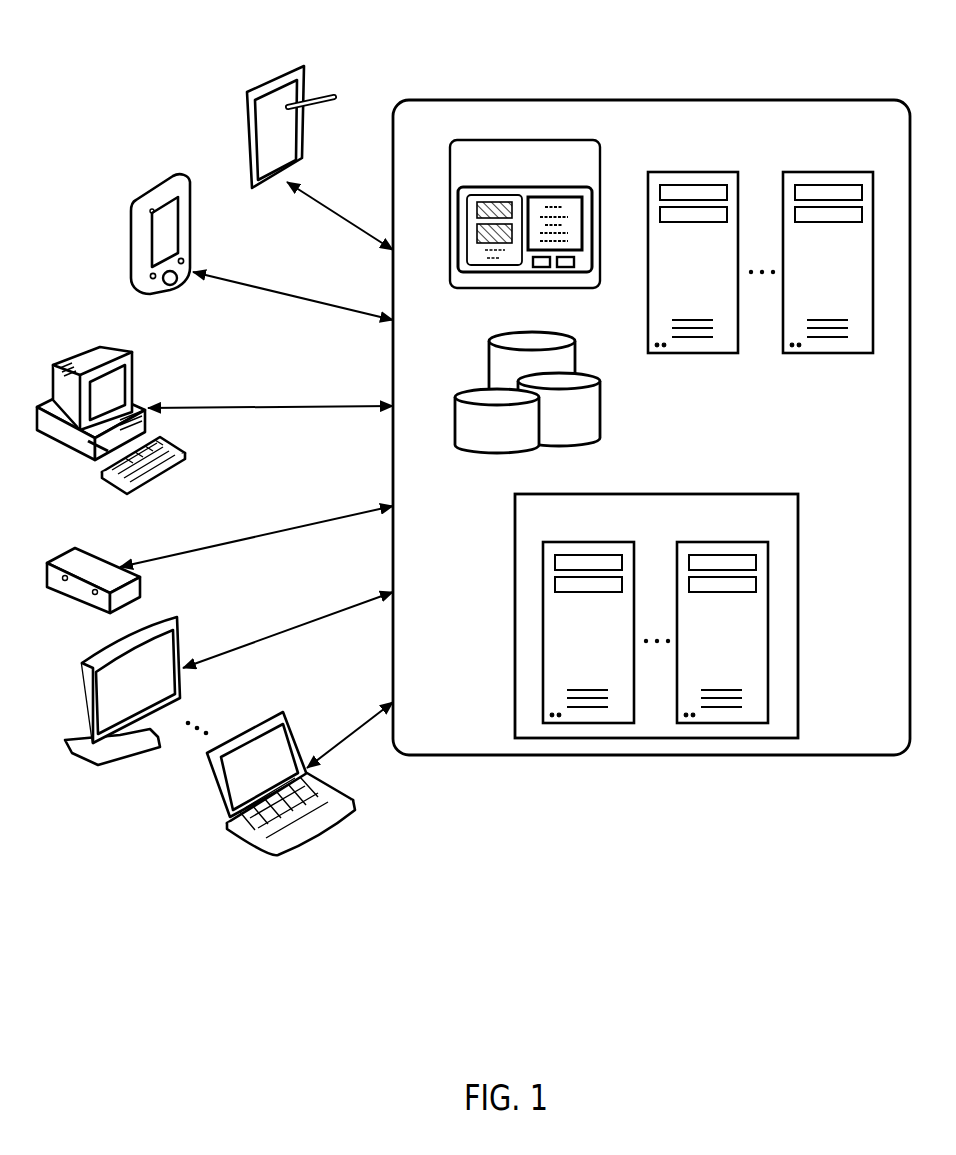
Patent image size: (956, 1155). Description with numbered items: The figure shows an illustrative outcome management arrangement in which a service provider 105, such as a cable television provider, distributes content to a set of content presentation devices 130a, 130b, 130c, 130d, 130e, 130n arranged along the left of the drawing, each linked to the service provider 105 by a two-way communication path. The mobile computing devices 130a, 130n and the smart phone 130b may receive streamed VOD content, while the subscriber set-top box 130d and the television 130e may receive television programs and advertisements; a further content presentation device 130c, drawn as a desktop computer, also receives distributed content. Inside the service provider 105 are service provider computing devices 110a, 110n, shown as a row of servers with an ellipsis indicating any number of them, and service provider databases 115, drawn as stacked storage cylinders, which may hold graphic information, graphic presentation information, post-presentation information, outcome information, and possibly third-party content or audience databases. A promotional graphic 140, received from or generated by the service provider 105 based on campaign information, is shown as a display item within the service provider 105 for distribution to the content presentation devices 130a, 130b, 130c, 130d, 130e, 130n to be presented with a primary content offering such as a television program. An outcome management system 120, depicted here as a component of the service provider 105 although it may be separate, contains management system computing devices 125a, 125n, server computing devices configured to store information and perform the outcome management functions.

The service provider 105 is at (633, 136).
The promotional graphic 140 is at (508, 177).
The service provider computing device 110a is at (670, 285).
The service provider computing device 110n is at (805, 285).
The service provider databases 115 is at (485, 437).
The outcome management system 120 is at (639, 530).
The management system computing device 125a is at (565, 654).
The management system computing device 125n is at (699, 654).
The mobile computing device 130a is at (293, 63).
The smart phone 130b is at (174, 174).
The content presentation device 130c is at (135, 362).
The subscriber set-top box 130d is at (93, 551).
The television 130e is at (177, 622).
The mobile computing device 130n is at (292, 715).